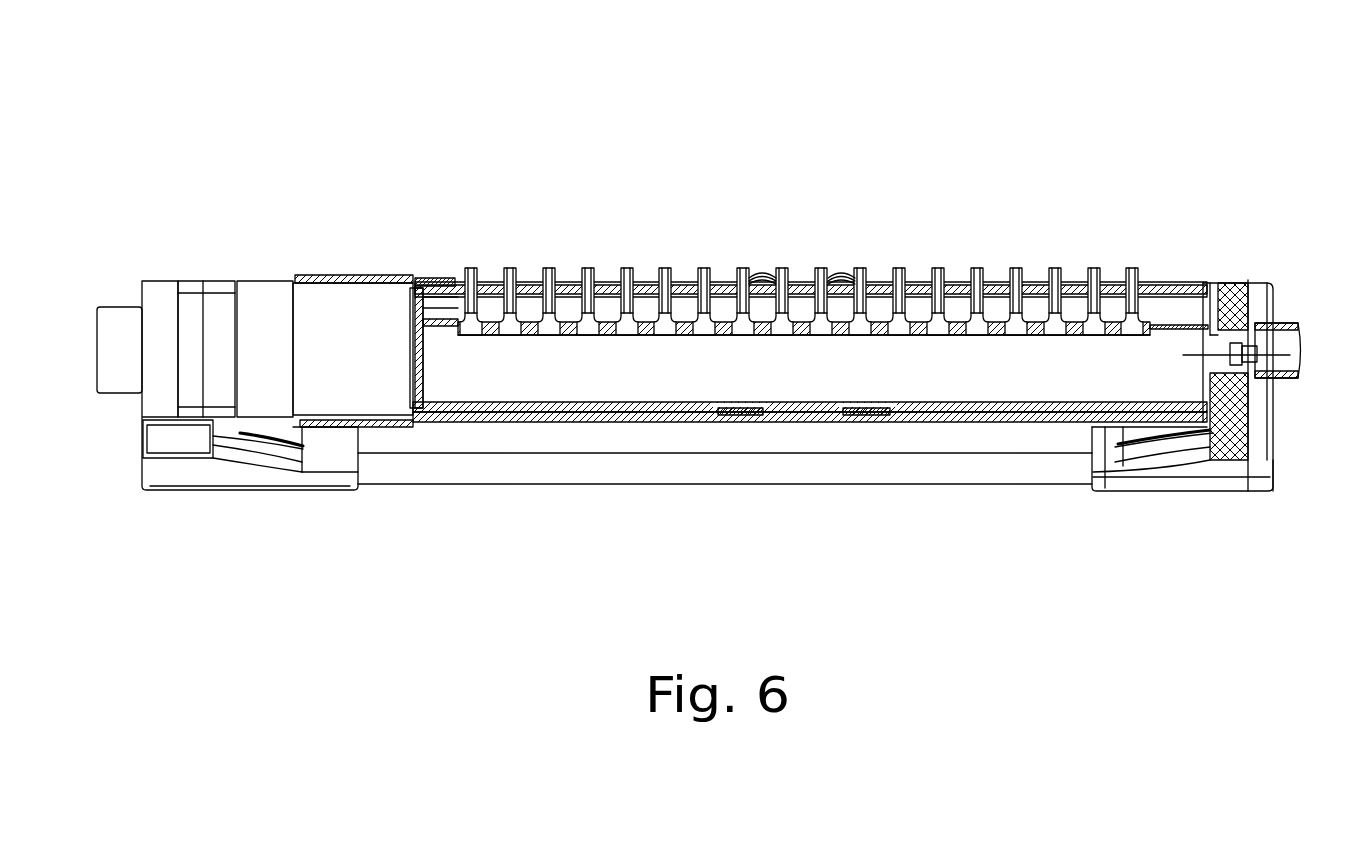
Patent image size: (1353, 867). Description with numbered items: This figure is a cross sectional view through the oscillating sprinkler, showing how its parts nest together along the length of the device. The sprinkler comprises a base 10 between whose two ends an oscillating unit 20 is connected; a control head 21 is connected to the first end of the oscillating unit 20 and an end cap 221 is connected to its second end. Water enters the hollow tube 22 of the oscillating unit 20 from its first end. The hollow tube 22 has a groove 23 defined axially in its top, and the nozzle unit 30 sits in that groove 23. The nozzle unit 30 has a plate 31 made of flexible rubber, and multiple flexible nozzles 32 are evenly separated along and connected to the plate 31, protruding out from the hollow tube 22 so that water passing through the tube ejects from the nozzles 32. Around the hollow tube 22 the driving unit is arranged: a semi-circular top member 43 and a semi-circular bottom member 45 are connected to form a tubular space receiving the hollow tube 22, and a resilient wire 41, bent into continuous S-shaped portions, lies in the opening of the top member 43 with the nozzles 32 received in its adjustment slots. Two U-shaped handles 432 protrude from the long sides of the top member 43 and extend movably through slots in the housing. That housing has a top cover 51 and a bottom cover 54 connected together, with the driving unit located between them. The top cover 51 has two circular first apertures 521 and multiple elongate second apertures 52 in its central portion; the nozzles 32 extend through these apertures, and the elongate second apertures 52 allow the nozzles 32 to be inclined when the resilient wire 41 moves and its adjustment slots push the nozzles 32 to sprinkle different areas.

The base 10 is at (237, 497).
The oscillating unit 20 is at (287, 262).
The control head 21 is at (262, 300).
The hollow tube 22 is at (411, 365).
The end cap 221 is at (1208, 283).
The groove 23 is at (1163, 320).
The nozzle unit 30 is at (801, 205).
The plate 31 is at (1040, 333).
The flexible nozzles 32 is at (1012, 277).
The resilient wire 41 is at (918, 287).
The top member 43 is at (442, 297).
The handles 432 is at (762, 270).
The bottom member 45 is at (753, 417).
The top cover 51 is at (428, 283).
The second apertures 52 is at (610, 287).
The first apertures 521 is at (833, 273).
The bottom cover 54 is at (955, 420).